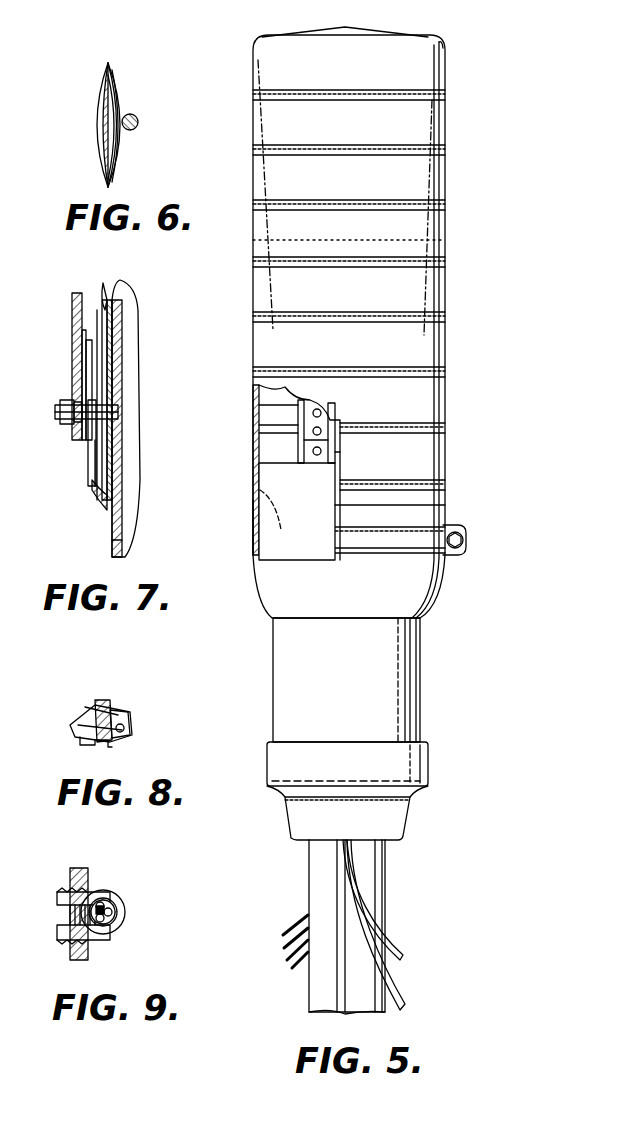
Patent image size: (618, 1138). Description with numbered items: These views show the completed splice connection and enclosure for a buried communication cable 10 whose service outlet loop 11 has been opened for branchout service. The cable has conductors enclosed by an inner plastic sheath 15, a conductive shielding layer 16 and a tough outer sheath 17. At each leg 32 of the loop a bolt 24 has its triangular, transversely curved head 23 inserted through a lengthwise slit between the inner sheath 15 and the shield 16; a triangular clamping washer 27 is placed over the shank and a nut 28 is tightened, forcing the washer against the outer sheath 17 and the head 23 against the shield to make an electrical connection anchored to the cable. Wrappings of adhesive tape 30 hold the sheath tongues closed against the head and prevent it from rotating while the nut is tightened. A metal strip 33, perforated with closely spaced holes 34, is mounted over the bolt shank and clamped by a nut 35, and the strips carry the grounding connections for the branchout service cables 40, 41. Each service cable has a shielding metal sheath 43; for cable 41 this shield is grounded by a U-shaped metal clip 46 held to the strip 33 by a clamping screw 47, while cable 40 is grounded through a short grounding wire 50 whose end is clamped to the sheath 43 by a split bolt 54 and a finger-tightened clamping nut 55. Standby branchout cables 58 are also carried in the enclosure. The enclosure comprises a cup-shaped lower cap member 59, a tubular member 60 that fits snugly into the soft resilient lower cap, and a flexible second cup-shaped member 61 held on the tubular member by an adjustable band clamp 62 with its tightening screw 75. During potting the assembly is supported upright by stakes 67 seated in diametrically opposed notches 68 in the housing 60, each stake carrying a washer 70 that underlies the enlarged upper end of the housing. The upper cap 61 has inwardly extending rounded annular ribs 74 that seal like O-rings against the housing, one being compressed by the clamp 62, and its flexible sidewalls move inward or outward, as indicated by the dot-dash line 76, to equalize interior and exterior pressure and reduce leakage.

In FIG. 5, the communication cable 10 is at (410, 900).
In FIG. 5, the service outlet loop 11 is at (348, 455).
In FIG. 7, the inner plastic sheath 15 is at (128, 290).
In FIG. 7, the shielding layer 16 is at (110, 500).
In FIG. 7, the outer sheath 17 is at (112, 545).
In FIG. 7, the bolt head 23 is at (116, 370).
In FIG. 7, the bolt 24 is at (58, 412).
In FIG. 7, the clamping washer 27 is at (92, 470).
In FIG. 7, the nut 28 is at (80, 425).
In FIG. 7, the adhesive tape 30 is at (108, 298).
In FIG. 5, the leg 32 is at (370, 858).
In FIG. 5, the metal strip 33 is at (322, 416).
In FIG. 7, the metal strip 33 is at (72, 325).
In FIG. 8, the metal strip 33 is at (72, 718).
In FIG. 5, the hole 34 is at (315, 437).
In FIG. 7, the hole 34 is at (82, 350).
In FIG. 7, the nut 35 is at (86, 375).
In FIG. 5, the service cable 40 is at (395, 1000).
In FIG. 9, the service cable 40 is at (124, 930).
In FIG. 5, the service cable 41 is at (405, 956).
In FIG. 8, the service cable 41 is at (124, 728).
In FIG. 8, the shielding metal sheath 43 is at (112, 700).
In FIG. 9, the shielding metal sheath 43 is at (98, 930).
In FIG. 8, the U-shaped metal clip 46 is at (122, 714).
In FIG. 8, the clamping screw 47 is at (80, 740).
In FIG. 9, the grounding wire 50 is at (125, 907).
In FIG. 9, the split bolt 54 is at (112, 900).
In FIG. 9, the clamping nut 55 is at (88, 872).
In FIG. 5, the standby branchout cables 58 is at (290, 908).
In FIG. 5, the lower cap member 59 is at (422, 814).
In FIG. 5, the tubular member 60 is at (437, 668).
In FIG. 6, the tubular member 60 is at (134, 85).
In FIG. 5, the second cup-shaped member 61 is at (457, 497).
In FIG. 5, the band clamp 62 is at (400, 547).
In FIG. 6, the stake 67 is at (137, 125).
In FIG. 6, the notch 68 is at (132, 105).
In FIG. 7, the washer 70 is at (12, 264).
In FIG. 5, the annular rib 74 is at (430, 422).
In FIG. 5, the tightening screw 75 is at (463, 533).
In FIG. 5, the dot-dash line 76 is at (268, 236).